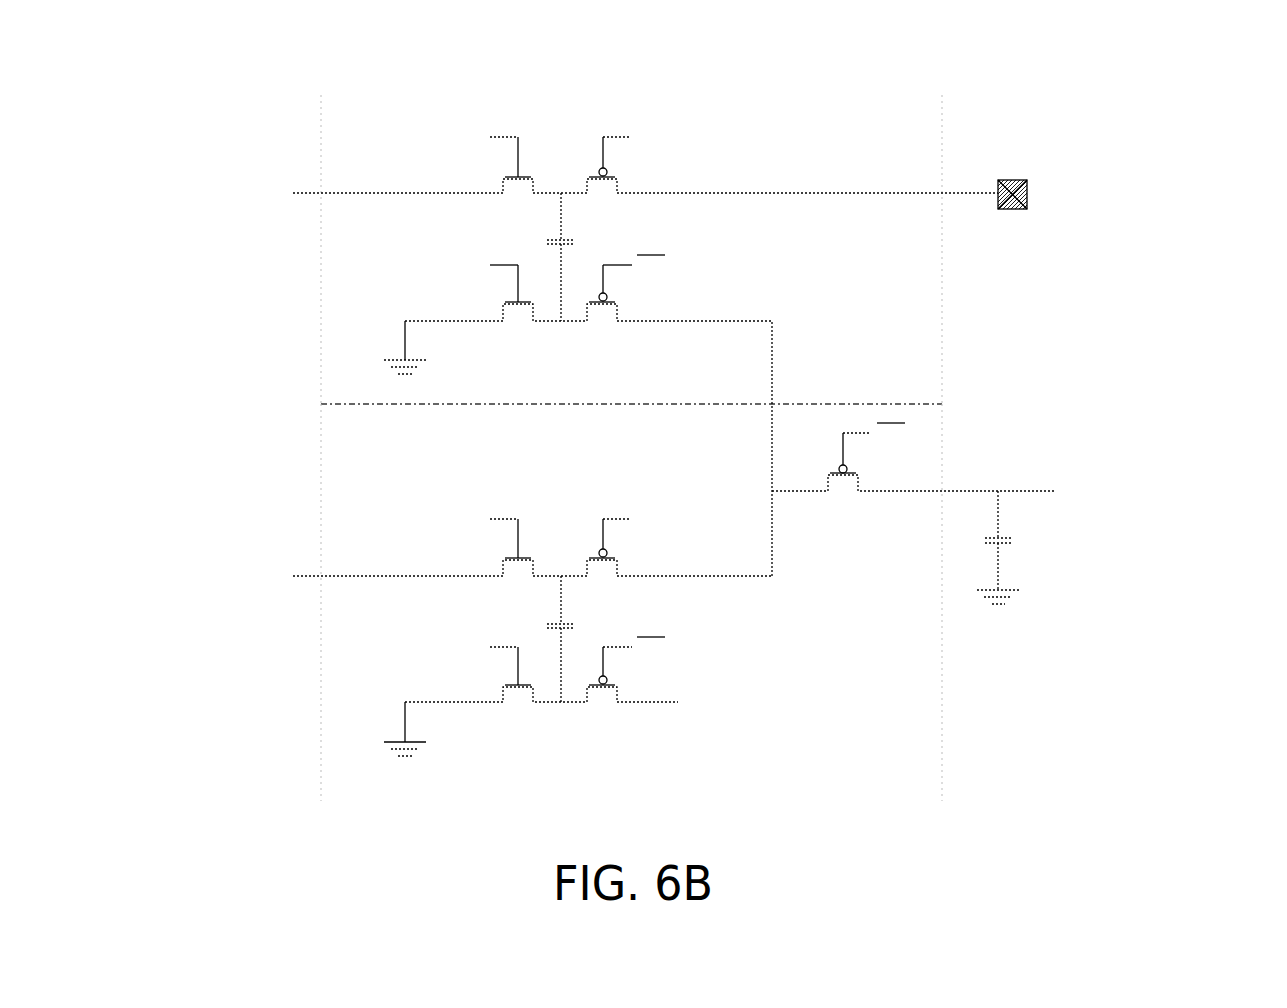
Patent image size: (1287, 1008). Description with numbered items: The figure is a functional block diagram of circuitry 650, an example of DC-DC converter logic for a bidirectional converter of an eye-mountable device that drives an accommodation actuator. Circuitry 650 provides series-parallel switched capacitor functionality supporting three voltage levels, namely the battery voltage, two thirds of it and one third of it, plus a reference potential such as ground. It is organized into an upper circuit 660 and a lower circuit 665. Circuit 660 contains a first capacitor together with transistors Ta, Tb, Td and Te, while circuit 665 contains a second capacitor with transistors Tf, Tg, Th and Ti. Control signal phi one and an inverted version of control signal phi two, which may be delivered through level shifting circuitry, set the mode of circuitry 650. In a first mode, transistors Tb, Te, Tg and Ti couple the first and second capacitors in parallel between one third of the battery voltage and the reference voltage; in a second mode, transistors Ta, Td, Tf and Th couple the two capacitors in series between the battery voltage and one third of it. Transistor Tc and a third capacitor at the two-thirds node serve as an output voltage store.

The circuitry 650 is at (1229, 110).
The circuit 660 is at (934, 119).
The circuit 665 is at (934, 791).